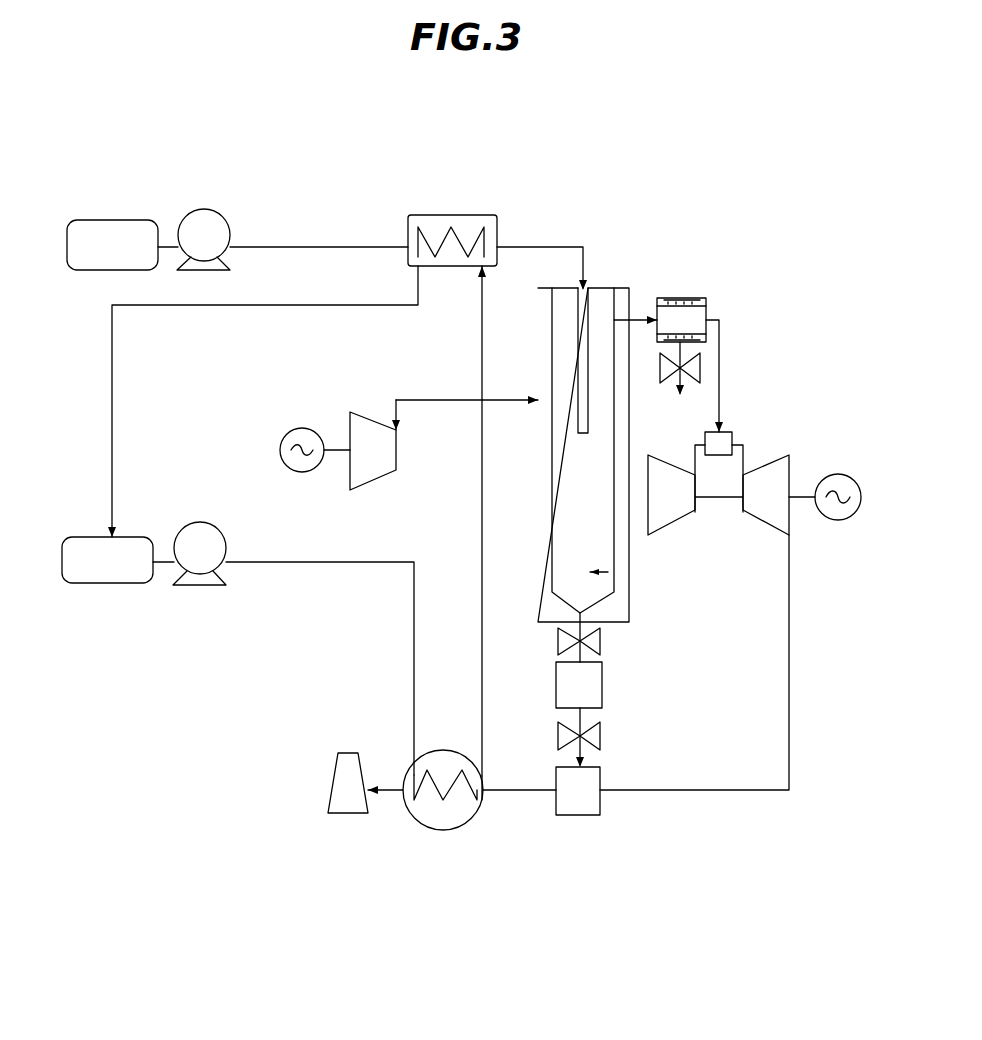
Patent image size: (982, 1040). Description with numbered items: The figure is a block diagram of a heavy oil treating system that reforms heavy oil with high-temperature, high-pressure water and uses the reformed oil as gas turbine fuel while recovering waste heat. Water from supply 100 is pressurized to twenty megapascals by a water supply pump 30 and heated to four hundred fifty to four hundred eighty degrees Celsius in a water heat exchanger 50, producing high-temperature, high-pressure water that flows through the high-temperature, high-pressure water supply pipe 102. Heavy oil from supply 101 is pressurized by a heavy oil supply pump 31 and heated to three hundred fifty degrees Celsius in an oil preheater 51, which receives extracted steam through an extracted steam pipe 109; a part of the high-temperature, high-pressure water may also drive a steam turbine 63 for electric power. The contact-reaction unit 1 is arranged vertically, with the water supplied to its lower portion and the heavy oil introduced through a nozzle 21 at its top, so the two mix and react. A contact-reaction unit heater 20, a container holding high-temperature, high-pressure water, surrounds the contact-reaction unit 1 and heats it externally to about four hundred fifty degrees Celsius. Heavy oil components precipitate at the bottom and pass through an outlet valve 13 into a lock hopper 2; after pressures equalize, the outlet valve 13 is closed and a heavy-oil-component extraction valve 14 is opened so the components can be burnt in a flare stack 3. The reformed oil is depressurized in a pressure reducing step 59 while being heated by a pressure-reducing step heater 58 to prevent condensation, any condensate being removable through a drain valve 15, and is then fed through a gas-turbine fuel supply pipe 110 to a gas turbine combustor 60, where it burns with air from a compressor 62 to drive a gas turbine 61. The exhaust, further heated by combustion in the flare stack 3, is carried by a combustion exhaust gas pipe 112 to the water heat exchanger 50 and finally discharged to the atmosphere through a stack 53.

The contact-reaction unit 1 is at (570, 487).
The lock hopper 2 is at (602, 684).
The flare stack 3 is at (578, 815).
The outlet valve 13 is at (600, 640).
The heavy-oil-component extraction valve 14 is at (600, 735).
The drain valve 15 is at (667, 381).
The contact-reaction unit heater 20 is at (629, 600).
The nozzle 21 is at (578, 343).
The water supply pump 30 is at (201, 522).
The heavy oil supply pump 31 is at (204, 209).
The water heat exchanger 50 is at (443, 830).
The oil preheater 51 is at (451, 215).
The stack 53 is at (347, 813).
The pressure-reducing step heater 58 is at (662, 298).
The pressure reducing step 59 is at (686, 310).
The gas turbine combustor 60 is at (735, 432).
The gas turbine 61 is at (760, 532).
The compressor 62 is at (672, 532).
The steam turbine 63 is at (374, 420).
The water supply 100 is at (80, 537).
The heavy oil supply 101 is at (113, 220).
The high-temperature, high-pressure water supply pipe 102 is at (482, 522).
The extracted steam pipe 109 is at (482, 345).
The gas-turbine fuel supply pipe 110 is at (719, 318).
The combustion exhaust gas pipe 112 is at (789, 623).